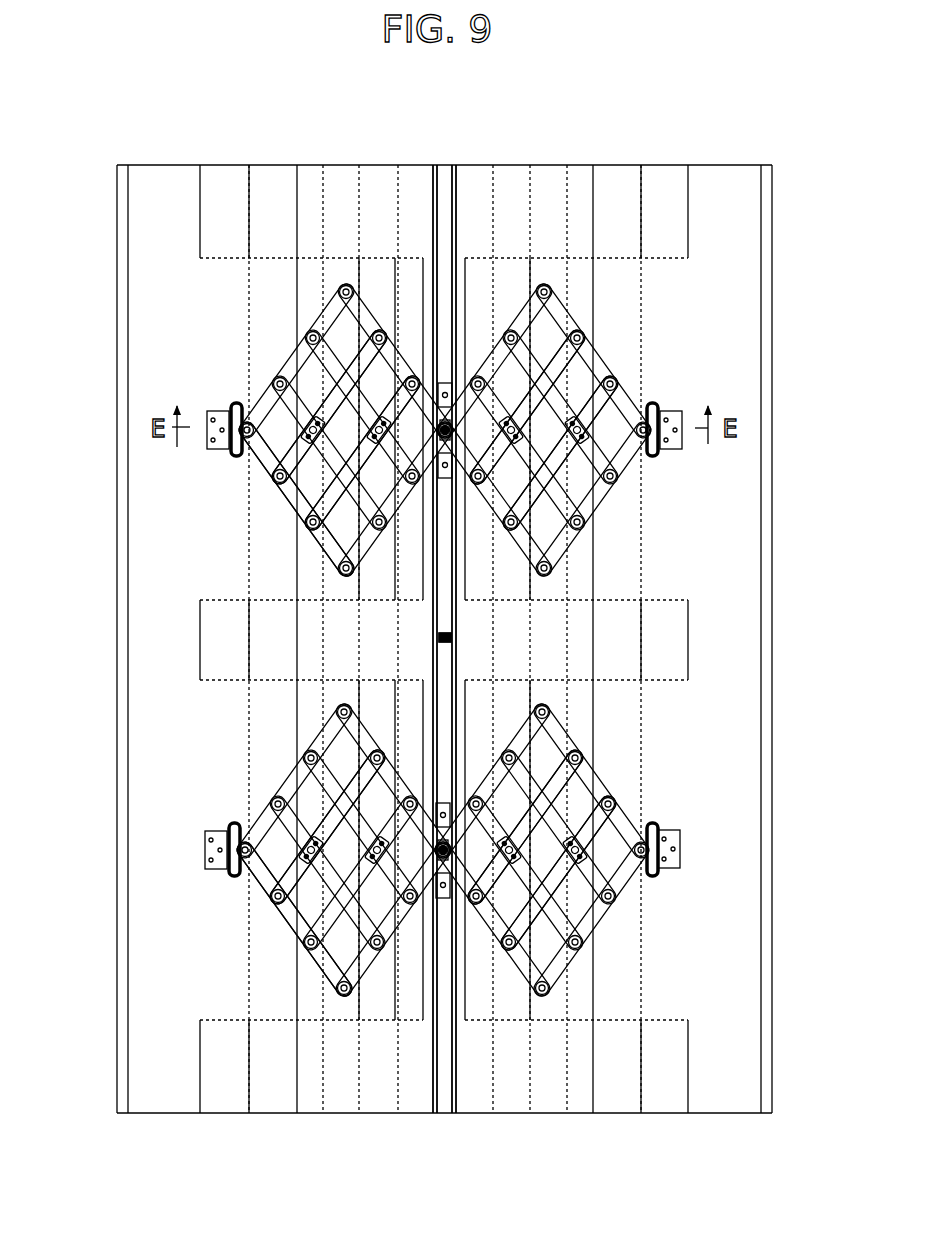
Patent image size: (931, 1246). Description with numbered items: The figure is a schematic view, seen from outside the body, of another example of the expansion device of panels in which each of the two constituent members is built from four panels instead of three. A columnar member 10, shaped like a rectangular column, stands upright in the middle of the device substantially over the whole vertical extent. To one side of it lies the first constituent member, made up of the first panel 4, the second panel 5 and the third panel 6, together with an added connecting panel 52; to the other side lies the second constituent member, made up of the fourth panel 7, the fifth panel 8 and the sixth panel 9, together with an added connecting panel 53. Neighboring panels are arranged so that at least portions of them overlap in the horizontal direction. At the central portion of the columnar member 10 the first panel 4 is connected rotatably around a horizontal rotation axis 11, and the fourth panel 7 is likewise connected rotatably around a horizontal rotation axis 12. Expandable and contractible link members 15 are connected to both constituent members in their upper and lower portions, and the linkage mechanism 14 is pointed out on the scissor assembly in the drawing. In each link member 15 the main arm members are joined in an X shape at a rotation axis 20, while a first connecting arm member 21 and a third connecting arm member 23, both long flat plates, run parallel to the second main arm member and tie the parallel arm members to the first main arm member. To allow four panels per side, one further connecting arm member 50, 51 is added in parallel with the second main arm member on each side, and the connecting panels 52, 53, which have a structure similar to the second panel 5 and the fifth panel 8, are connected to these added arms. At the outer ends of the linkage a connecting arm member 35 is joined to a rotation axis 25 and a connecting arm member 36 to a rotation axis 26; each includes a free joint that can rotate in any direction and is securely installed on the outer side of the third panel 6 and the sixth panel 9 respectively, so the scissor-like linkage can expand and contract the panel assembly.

The first panel 4 is at (469, 198).
The second panel 5 is at (502, 285).
The third panel 6 is at (722, 200).
The fourth panel 7 is at (408, 205).
The fifth panel 8 is at (375, 278).
The sixth panel 9 is at (165, 212).
The columnar member 10 is at (445, 187).
The rotation axis 11 is at (452, 638).
The rotation axis 12 is at (437, 638).
The pantograph mechanism 14 is at (603, 347).
The link member 15 is at (258, 500).
The rotation axis 20 is at (455, 440).
The first connecting arm member 21 is at (547, 372).
The third connecting arm member 23 is at (345, 475).
The rotation axis 25 is at (680, 447).
The rotation axis 26 is at (217, 420).
The connecting arm member 35 is at (683, 420).
The connecting arm member 36 is at (208, 445).
The connecting arm member 50 is at (570, 450).
The connecting arm member 51 is at (300, 455).
The connecting panel 52 is at (570, 275).
The connecting panel 53 is at (305, 286).